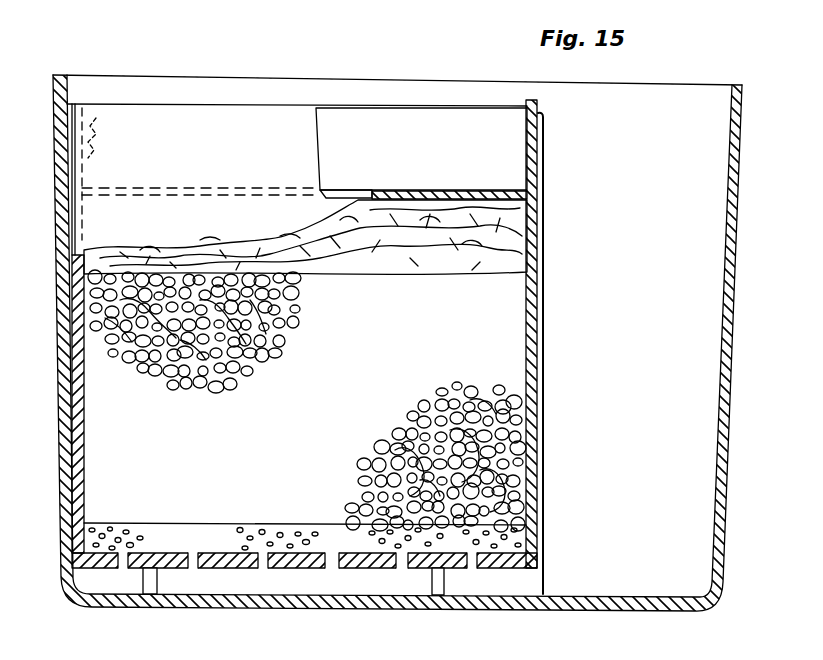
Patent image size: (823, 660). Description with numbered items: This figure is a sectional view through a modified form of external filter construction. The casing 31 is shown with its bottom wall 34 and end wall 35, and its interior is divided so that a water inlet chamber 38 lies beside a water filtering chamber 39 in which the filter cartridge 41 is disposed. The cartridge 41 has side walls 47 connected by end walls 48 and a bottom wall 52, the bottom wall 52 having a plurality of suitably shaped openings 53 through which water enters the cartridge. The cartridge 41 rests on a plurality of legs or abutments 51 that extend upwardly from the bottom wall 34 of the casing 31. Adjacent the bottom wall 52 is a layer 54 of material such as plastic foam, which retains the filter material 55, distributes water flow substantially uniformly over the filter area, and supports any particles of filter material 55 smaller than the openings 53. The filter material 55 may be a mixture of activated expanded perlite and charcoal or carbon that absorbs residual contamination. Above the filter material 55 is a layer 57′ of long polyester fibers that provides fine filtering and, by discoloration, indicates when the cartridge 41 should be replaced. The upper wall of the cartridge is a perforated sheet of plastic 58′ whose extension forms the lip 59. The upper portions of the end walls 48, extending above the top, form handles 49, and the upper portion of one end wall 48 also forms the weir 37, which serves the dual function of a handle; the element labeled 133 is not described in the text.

The casing 31 is at (733, 607).
The bottom wall 34 is at (314, 607).
The end wall 35 is at (735, 298).
The weir 37 is at (541, 149).
The water inlet chamber 38 is at (700, 374).
The water filtering chamber 39 is at (258, 578).
The filter cartridge 41 is at (543, 346).
The side wall 47 is at (194, 113).
The end wall 48 is at (538, 223).
The handle 49 is at (97, 118).
The leg 51 is at (153, 590).
The bottom wall 52 is at (376, 572).
The opening 53 is at (333, 555).
The layer 54 is at (280, 523).
The filter material 55 is at (126, 345).
The layer 57′ is at (405, 270).
The perforated sheet of plastic 58′ is at (396, 190).
The lip 59 is at (341, 190).
The panel 133 is at (546, 276).